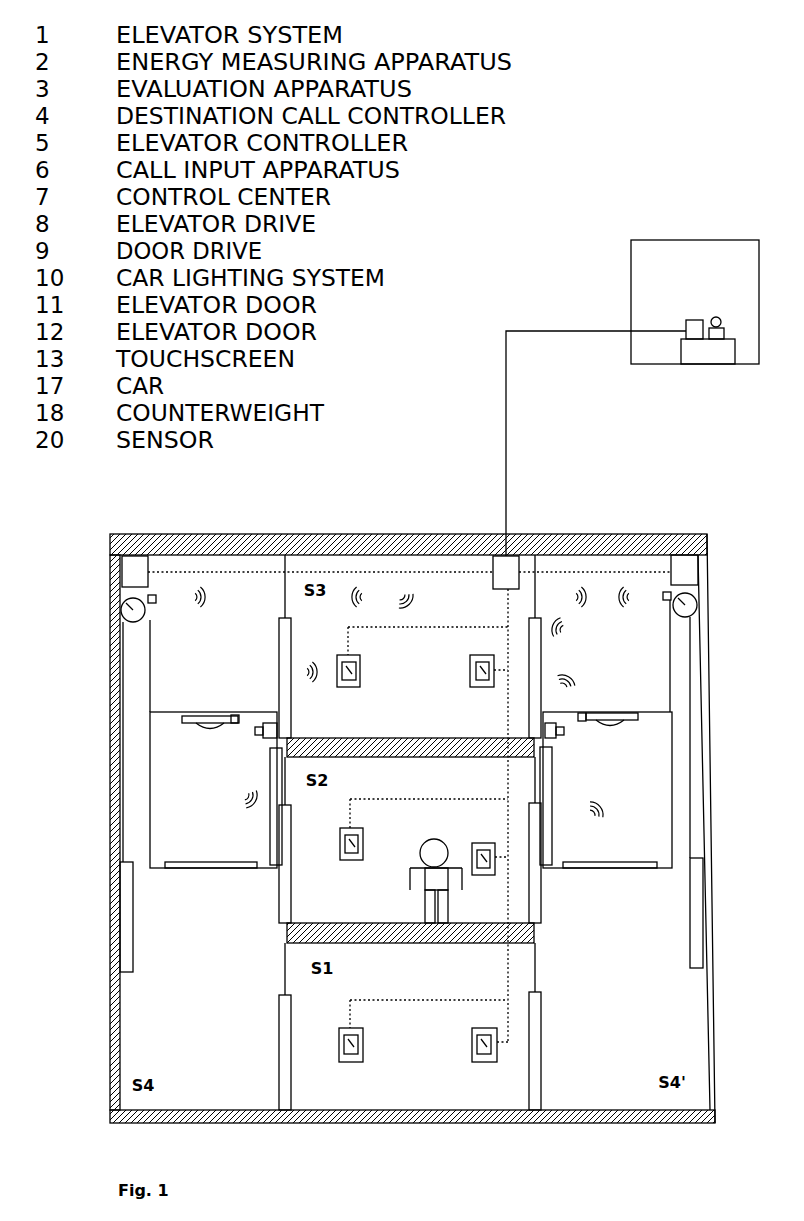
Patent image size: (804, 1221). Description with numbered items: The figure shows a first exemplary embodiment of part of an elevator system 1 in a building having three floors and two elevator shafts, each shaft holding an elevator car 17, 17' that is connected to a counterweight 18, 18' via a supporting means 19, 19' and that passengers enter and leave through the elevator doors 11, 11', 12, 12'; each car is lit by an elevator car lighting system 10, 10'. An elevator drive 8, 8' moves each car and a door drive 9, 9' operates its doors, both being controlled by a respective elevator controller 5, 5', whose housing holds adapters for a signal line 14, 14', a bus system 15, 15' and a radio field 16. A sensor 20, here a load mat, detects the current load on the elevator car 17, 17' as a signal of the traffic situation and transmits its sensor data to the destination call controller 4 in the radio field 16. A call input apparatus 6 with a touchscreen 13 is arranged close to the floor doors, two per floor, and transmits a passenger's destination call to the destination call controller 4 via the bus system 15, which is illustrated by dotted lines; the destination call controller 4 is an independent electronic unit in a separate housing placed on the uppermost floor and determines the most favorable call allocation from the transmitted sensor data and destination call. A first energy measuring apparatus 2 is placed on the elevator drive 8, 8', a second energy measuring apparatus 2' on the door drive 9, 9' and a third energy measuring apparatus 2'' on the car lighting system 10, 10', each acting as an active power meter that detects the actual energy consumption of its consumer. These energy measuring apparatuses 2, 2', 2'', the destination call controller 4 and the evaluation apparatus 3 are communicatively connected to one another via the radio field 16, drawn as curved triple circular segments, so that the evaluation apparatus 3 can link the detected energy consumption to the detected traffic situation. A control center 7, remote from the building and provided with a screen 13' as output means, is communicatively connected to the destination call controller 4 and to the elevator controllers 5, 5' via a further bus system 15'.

The elevator system 1 is at (412, 813).
The energy measuring apparatus 2 is at (409, 630).
The energy measuring apparatus 2' is at (411, 743).
The energy measuring apparatus 2'' is at (411, 735).
The evaluation apparatus 3 is at (510, 572).
The destination call controller 4 is at (471, 578).
The elevator controller 5 is at (107, 570).
The elevator controller 5' is at (712, 575).
The call input apparatus 6 is at (417, 860).
The control center 7 is at (656, 302).
The elevator drive 8 is at (108, 725).
The elevator drive 8' is at (712, 725).
The door drive 9 is at (259, 700).
The door drive 9' is at (564, 761).
The elevator car lighting system 10 is at (210, 690).
The car lighting system 10' is at (613, 685).
The elevator door 11 is at (288, 864).
The elevator door 11' is at (538, 864).
The elevator door 12 is at (242, 806).
The elevator door 12' is at (586, 806).
The touchscreen 13 is at (417, 860).
The screen 13' is at (706, 301).
The signal line 14 is at (320, 536).
The signal line 14' is at (594, 536).
The bus system 15 is at (428, 815).
The bus system 15' is at (553, 443).
The radio field 16 is at (558, 582).
The elevator car 17 is at (213, 790).
The elevator car 17' is at (607, 790).
The counterweight 18 is at (162, 925).
The counterweight 18' is at (663, 923).
The supporting means 19 is at (83, 832).
The supporting means 19' is at (738, 828).
The sensor 20 is at (200, 870).